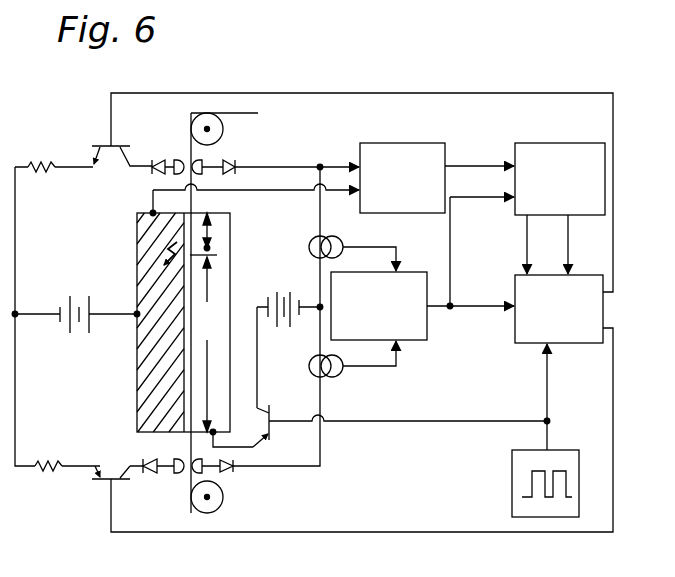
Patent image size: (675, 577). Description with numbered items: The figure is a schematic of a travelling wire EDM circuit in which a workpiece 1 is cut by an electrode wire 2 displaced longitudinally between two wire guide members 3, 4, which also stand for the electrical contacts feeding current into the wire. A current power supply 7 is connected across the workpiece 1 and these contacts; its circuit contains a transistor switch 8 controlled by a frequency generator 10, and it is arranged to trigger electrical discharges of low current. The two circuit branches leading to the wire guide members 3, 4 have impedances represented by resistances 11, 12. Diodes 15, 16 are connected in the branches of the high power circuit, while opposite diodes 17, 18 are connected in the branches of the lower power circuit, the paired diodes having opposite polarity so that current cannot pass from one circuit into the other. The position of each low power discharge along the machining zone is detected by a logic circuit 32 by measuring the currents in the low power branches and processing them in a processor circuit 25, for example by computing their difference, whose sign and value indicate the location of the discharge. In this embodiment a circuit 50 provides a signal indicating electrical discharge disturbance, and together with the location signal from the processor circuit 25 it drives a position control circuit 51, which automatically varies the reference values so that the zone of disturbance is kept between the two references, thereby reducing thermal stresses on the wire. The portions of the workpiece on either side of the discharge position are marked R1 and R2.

The workpiece 1 is at (165, 374).
The electrode wire 2 is at (185, 447).
The wire guide member 3 is at (184, 160).
The wire guide member 4 is at (187, 475).
The current power supply 7 is at (290, 292).
The transistor switch 8 is at (271, 409).
The frequency generator 10 is at (522, 460).
The resistance 11 is at (46, 172).
The resistance 12 is at (50, 462).
The diode 15 is at (154, 160).
The diode 16 is at (150, 478).
The diode 17 is at (233, 158).
The diode 18 is at (236, 472).
The processor circuit 25 is at (415, 327).
The logic circuit 32 is at (510, 340).
The disturbance detecting circuit 50 is at (420, 143).
The position control circuit 51 is at (550, 160).
The resistance portion R1 is at (213, 237).
The resistance portion R2 is at (206, 344).